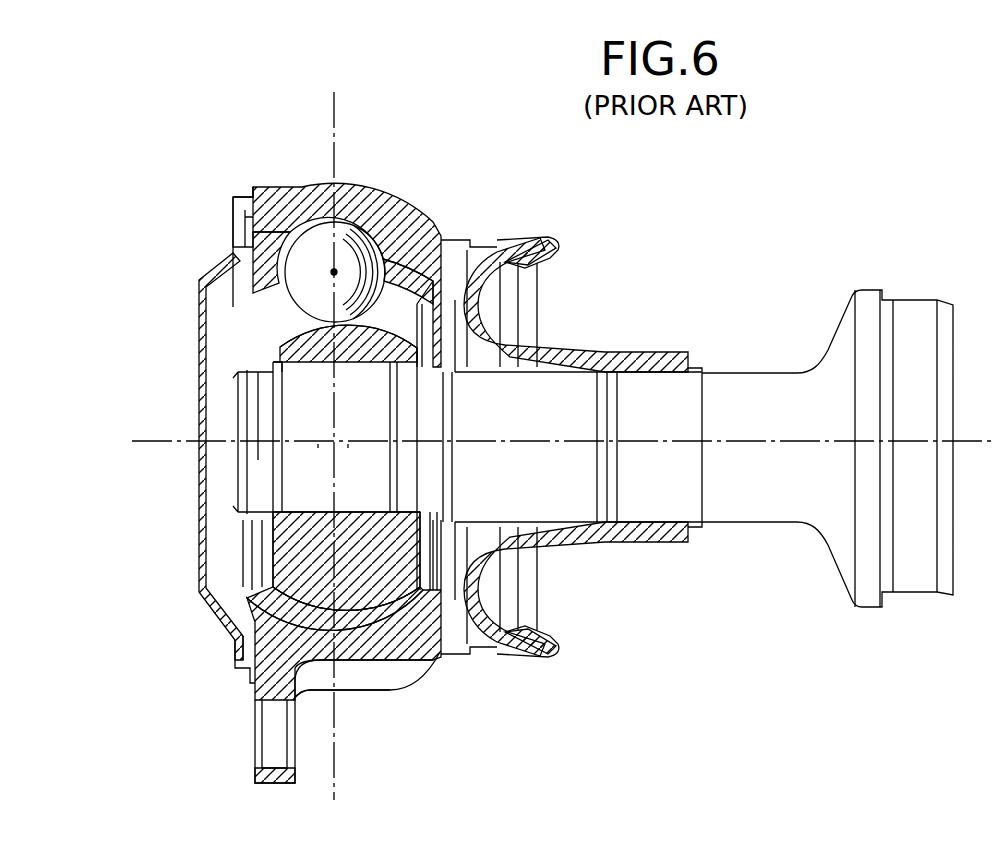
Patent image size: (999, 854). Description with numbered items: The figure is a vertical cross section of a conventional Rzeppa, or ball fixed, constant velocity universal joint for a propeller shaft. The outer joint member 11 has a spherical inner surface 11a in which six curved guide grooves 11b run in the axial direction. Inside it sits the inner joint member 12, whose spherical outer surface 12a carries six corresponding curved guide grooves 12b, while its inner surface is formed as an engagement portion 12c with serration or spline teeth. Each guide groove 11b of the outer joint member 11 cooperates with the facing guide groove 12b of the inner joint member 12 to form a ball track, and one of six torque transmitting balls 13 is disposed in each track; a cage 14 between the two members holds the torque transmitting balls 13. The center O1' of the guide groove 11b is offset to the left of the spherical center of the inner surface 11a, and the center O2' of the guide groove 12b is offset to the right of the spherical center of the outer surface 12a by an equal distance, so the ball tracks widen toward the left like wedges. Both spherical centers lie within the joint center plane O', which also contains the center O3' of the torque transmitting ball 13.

The outer joint member 11 is at (253, 189).
The spherical inner surface 11a is at (352, 610).
The guide grooves 11b is at (243, 245).
The inner joint member 12 is at (263, 311).
The spherical outer surface 12a is at (368, 626).
The guide grooves 12b is at (300, 330).
The engagement portion 12c is at (291, 380).
The torque transmitting balls 13 is at (353, 219).
The cage 14 is at (405, 252).
The joint center plane O' is at (563, 445).
The center of the guide groove of the outer joint member O1' is at (302, 365).
The center of the guide groove of the inner joint member O2' is at (363, 417).
The center of the torque transmitting ball O3' is at (308, 201).